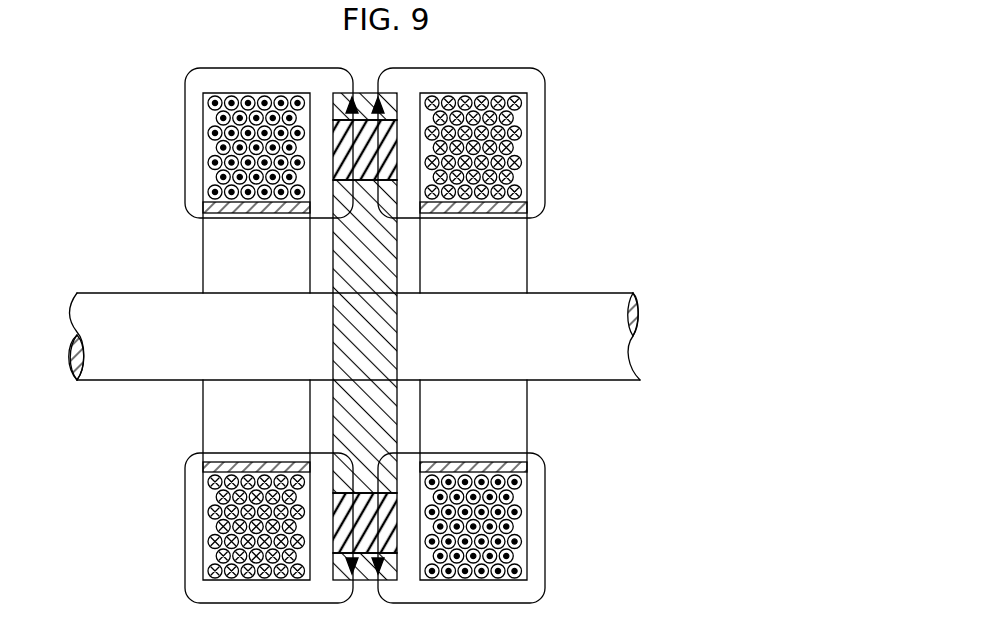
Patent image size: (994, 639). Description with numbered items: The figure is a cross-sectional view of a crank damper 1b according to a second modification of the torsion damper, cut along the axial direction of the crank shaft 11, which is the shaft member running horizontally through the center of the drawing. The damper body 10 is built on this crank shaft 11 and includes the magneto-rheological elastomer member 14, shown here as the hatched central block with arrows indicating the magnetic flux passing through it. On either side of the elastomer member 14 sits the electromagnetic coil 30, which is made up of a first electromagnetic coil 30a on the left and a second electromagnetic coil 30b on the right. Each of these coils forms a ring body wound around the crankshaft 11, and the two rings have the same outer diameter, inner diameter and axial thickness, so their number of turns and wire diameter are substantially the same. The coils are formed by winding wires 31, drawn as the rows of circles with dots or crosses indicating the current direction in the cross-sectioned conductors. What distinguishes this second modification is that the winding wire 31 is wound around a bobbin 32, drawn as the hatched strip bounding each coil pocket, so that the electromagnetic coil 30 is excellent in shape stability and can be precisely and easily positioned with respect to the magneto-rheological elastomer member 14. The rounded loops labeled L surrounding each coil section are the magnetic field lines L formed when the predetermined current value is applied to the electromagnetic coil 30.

The crank damper 1b is at (603, 88).
The damper body 10 is at (362, 243).
The crank shaft 11 is at (585, 293).
The magneto-rheological elastomer member 14 is at (367, 150).
The electromagnetic coil 30 is at (364, 336).
The first electromagnetic coil 30a is at (203, 415).
The second electromagnetic coil 30b is at (527, 403).
The winding wire 31 is at (214, 104).
The bobbin 32 is at (238, 208).
The magnetic field lines L is at (185, 147).